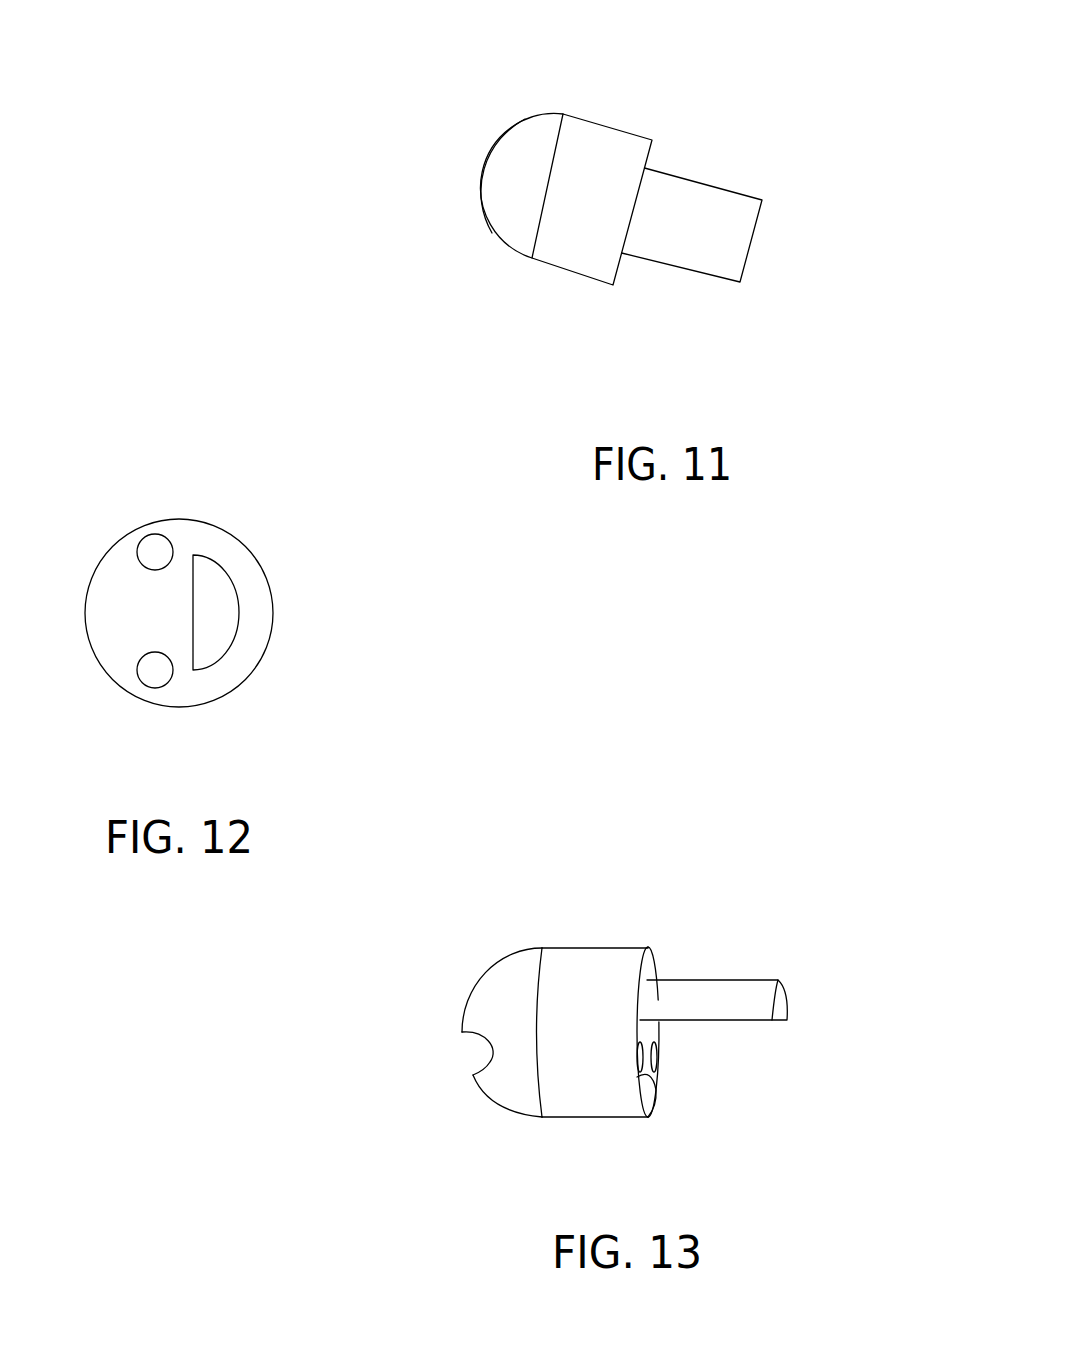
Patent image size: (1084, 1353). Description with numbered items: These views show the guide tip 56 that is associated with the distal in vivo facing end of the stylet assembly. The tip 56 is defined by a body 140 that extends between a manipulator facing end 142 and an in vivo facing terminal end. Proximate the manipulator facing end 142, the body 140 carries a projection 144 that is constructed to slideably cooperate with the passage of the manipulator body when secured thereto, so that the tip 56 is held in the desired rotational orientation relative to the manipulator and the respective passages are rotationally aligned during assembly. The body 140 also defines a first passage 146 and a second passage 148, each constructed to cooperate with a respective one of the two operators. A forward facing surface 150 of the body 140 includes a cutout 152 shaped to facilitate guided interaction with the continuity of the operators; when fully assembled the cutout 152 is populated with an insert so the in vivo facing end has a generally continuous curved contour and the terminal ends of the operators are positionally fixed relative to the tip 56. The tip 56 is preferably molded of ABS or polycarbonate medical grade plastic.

In FIG. 11, the tip 56 is at (570, 78).
In FIG. 12, the tip 56 is at (303, 473).
In FIG. 13, the tip 56 is at (577, 877).
In FIG. 11, the body 140 is at (563, 248).
In FIG. 12, the body 140 is at (210, 523).
In FIG. 13, the body 140 is at (617, 960).
In FIG. 11, the manipulator facing end 142 is at (764, 141).
In FIG. 13, the manipulator facing end 142 is at (803, 874).
In FIG. 11, the projection 144 is at (486, 80).
In FIG. 12, the projection 144 is at (222, 618).
In FIG. 13, the projection 144 is at (742, 995).
In FIG. 12, the first passage 146 is at (157, 677).
In FIG. 13, the first passage 146 is at (658, 1053).
In FIG. 12, the second passage 148 is at (152, 548).
In FIG. 13, the second passage 148 is at (658, 1080).
In FIG. 13, the forward facing surface 150 is at (408, 1099).
In FIG. 13, the cutout 152 is at (478, 1052).